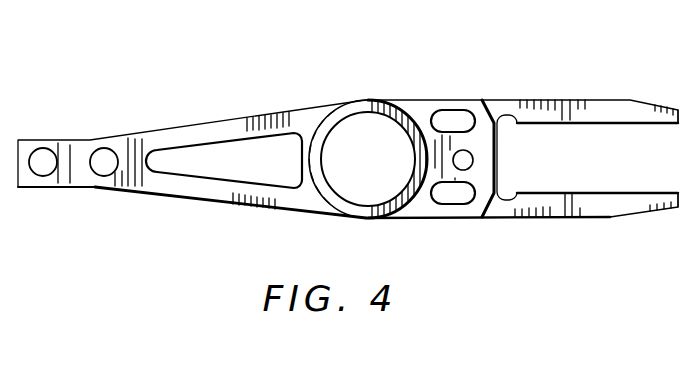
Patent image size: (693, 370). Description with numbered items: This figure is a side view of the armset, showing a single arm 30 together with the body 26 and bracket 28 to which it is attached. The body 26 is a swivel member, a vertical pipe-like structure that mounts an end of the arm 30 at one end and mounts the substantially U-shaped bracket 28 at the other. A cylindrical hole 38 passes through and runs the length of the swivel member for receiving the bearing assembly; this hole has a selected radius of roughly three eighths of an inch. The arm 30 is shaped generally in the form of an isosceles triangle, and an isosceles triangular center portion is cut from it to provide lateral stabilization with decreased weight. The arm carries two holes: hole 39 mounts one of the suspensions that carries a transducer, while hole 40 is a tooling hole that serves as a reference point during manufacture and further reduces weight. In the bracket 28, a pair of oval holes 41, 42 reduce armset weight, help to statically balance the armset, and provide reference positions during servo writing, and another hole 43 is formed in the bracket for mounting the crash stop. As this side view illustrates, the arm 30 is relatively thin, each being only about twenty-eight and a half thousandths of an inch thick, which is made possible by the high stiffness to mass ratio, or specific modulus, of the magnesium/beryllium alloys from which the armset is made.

The body 26 is at (400, 111).
The bracket 28 is at (600, 203).
The arm 30 is at (181, 124).
The cylindrical hole 38 is at (345, 157).
The hole 39 is at (43, 157).
The tooling hole 40 is at (104, 158).
The oval hole 41 is at (452, 120).
The oval hole 42 is at (457, 194).
The hole 43 is at (473, 160).